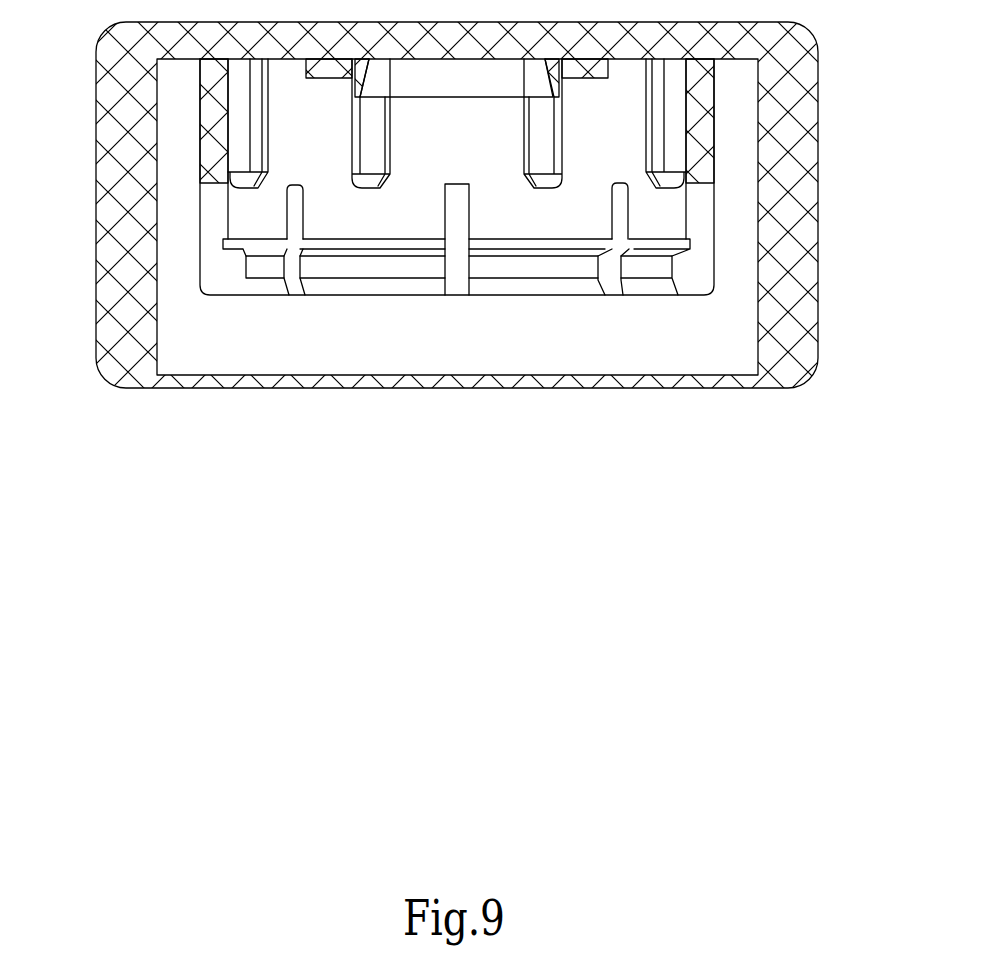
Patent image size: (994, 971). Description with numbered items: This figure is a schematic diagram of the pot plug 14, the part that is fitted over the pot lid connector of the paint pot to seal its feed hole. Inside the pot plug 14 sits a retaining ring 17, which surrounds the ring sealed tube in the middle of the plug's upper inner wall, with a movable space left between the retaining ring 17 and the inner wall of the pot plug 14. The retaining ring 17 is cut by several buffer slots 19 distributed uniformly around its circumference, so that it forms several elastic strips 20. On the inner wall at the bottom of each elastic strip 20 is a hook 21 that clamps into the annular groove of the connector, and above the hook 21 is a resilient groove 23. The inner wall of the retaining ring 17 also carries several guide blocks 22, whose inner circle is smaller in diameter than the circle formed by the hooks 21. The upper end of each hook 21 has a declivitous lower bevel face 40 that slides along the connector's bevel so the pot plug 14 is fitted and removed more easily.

The pot plug 14 is at (790, 190).
The retaining ring 17 is at (210, 123).
The buffer slot 19 is at (455, 213).
The elastic strip 20 is at (337, 215).
The hook 21 is at (352, 272).
The guide block 22 is at (375, 125).
The resilient groove 23 is at (412, 243).
The lower bevel face 40 is at (382, 251).